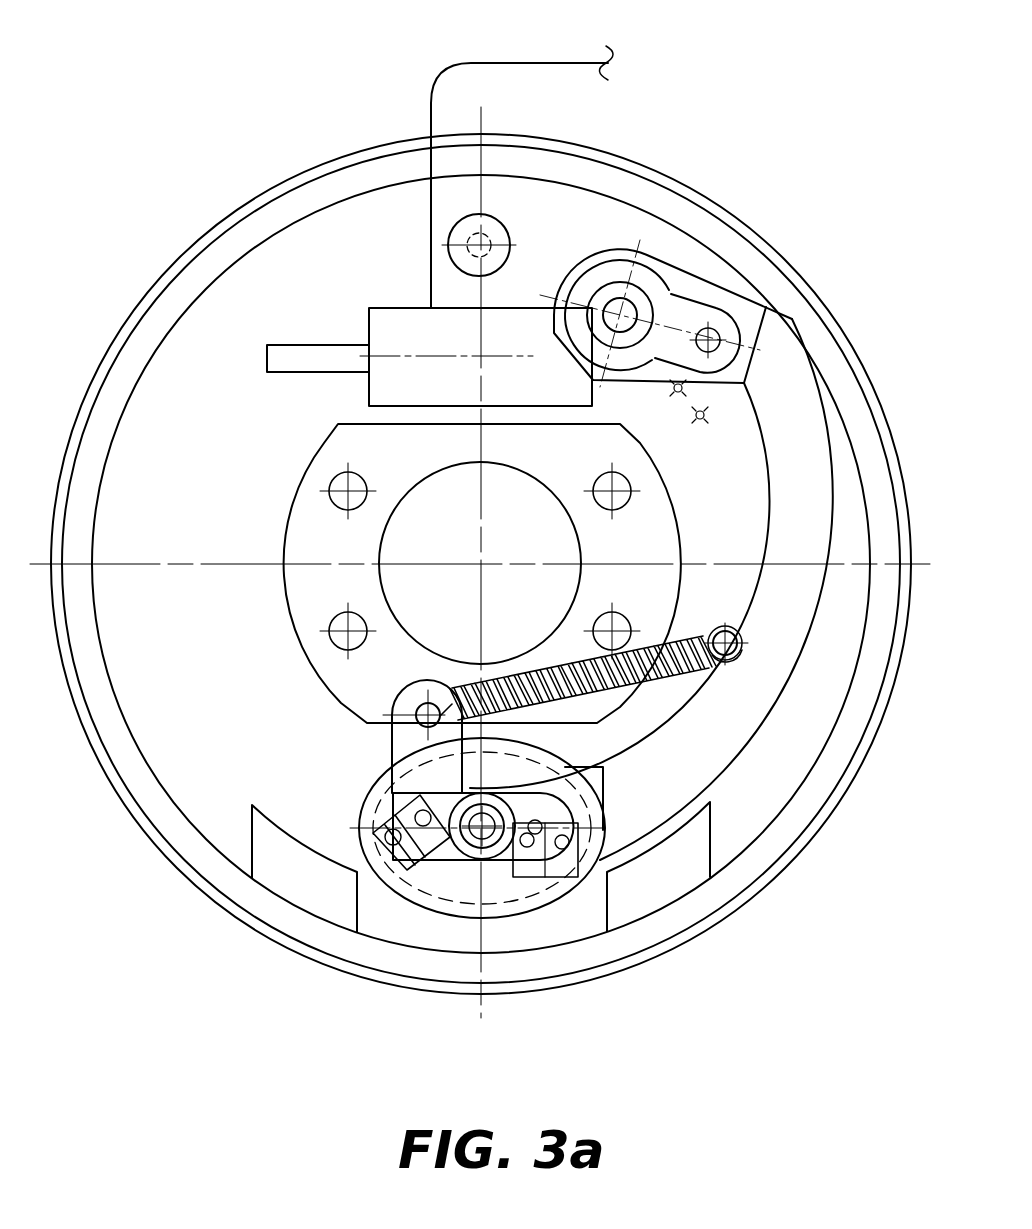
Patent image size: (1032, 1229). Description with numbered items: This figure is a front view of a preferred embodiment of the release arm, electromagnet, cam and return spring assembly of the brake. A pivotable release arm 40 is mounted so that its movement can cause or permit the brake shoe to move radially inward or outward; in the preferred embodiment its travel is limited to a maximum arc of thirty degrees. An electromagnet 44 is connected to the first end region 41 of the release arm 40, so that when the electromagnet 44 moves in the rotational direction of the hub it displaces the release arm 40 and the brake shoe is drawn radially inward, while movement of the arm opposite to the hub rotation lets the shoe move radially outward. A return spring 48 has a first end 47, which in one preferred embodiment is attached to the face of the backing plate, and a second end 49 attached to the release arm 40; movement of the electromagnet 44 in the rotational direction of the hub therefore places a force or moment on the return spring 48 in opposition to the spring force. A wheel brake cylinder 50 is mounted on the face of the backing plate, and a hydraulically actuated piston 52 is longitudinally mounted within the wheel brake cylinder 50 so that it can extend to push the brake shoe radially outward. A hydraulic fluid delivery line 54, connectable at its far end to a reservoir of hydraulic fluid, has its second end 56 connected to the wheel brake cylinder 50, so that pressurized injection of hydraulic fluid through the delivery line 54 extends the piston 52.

The release arm 40 is at (822, 484).
The first end region 41 is at (782, 360).
The electromagnet 44 is at (602, 250).
The first end 47 is at (736, 636).
The return spring 48 is at (520, 673).
The second end 49 is at (423, 727).
The wheel brake cylinder 50 is at (402, 317).
The hydraulically actuated piston 52 is at (297, 342).
The hydraulic fluid delivery line 54 is at (518, 62).
The second end 56 is at (429, 295).